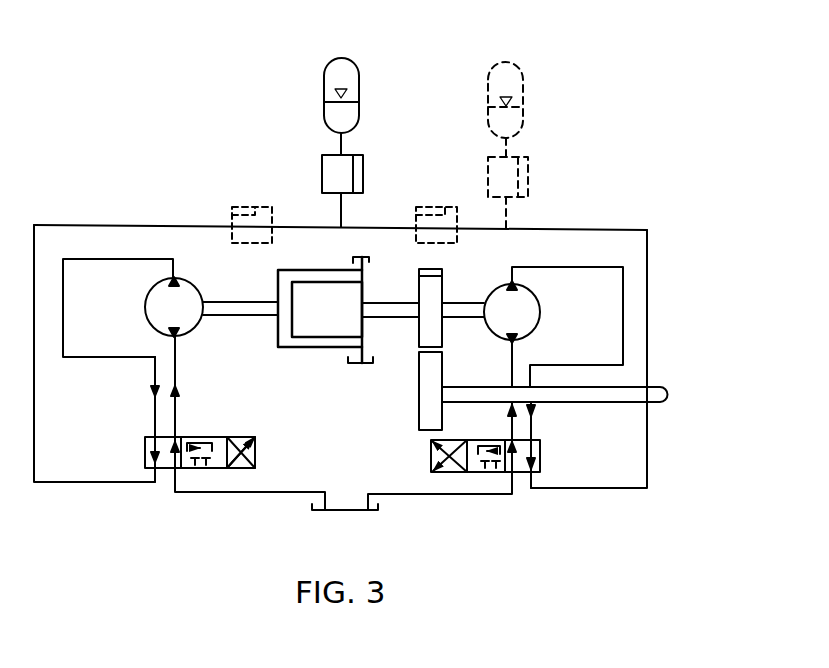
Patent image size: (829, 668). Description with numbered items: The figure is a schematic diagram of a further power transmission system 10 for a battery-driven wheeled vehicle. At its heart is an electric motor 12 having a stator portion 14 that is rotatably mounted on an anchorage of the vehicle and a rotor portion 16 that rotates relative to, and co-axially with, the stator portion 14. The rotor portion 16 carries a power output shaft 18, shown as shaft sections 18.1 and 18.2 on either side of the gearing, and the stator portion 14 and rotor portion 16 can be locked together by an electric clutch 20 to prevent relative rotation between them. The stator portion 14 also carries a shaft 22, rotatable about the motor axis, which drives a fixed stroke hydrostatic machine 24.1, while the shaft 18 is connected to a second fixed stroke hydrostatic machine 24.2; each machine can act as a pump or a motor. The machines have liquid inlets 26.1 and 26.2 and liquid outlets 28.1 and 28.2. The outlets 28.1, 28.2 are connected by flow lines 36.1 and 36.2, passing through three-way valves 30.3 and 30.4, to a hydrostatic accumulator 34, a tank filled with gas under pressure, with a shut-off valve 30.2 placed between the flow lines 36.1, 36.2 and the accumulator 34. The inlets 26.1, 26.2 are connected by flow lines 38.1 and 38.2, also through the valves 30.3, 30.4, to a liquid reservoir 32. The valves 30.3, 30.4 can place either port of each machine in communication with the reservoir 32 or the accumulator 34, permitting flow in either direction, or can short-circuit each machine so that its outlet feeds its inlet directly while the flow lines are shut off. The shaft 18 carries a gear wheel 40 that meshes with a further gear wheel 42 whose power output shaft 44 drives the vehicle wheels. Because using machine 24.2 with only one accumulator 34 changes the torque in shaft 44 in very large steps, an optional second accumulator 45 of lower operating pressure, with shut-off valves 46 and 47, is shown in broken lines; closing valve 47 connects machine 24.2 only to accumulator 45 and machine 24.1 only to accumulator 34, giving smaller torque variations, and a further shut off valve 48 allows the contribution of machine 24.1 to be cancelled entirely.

The power transmission system 10 is at (679, 142).
The electric motor 12 is at (323, 360).
The stator portion 14 is at (278, 343).
The rotor portion 16 is at (332, 288).
The power output shaft 18 is at (408, 326).
The power output shaft section 18.1 is at (397, 287).
The power output shaft section 18.2 is at (463, 312).
The electric clutch 20 is at (368, 261).
The shaft 22 is at (263, 289).
The fixed stroke hydrostatic machine 24.1 is at (142, 292).
The fixed stroke hydrostatic machine 24.2 is at (538, 290).
The liquid inlet 26.1 is at (171, 335).
The liquid inlet 26.2 is at (516, 339).
The liquid outlet 28.1 is at (184, 277).
The liquid outlet 28.2 is at (501, 277).
The shut-off valve 30.2 is at (373, 158).
The three-way valve 30.3 is at (264, 454).
The three-way valve 30.4 is at (426, 453).
The liquid reservoir 32 is at (345, 511).
The hydrostatic accumulator 34 is at (367, 78).
The flow line 36.1 is at (185, 225).
The flow line 36.2 is at (648, 249).
The flow line 38.1 is at (257, 493).
The flow line 38.2 is at (481, 494).
The gear wheel 40 is at (430, 293).
The further gear wheel 42 is at (427, 370).
The power output shaft 44 is at (649, 400).
The second accumulator 45 is at (537, 72).
The shut-off valve 46 is at (537, 184).
The shut-off valve 47 is at (449, 207).
The shut off valve 48 is at (253, 207).